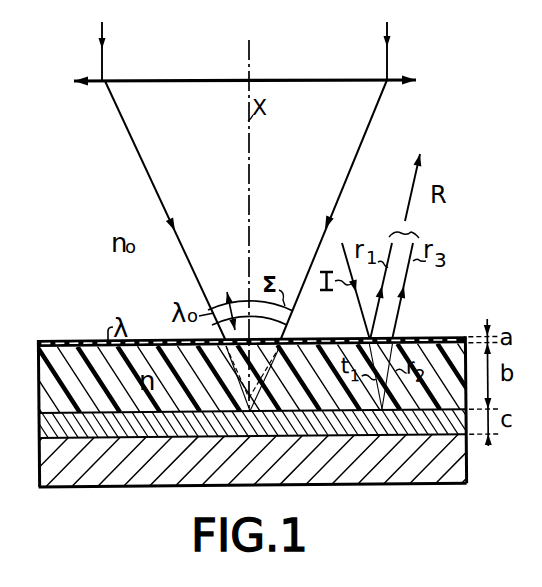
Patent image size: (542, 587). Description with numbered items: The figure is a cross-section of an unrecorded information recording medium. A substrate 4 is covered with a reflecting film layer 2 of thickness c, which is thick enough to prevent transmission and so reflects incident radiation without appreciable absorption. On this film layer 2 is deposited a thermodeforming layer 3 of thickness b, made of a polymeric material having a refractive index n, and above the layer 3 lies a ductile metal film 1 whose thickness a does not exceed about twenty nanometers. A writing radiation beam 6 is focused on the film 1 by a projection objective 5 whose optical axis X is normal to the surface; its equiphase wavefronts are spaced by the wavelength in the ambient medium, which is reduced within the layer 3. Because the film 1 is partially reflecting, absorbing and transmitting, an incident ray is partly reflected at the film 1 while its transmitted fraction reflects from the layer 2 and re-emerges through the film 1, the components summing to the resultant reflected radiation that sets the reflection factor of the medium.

The ductile metal film 1 is at (430, 341).
The reflecting film layer 2 is at (427, 381).
The thermodeforming layer 3 is at (39, 385).
The substrate 4 is at (48, 470).
The projection objective 5 is at (373, 71).
The writing radiation beam 6 is at (132, 143).